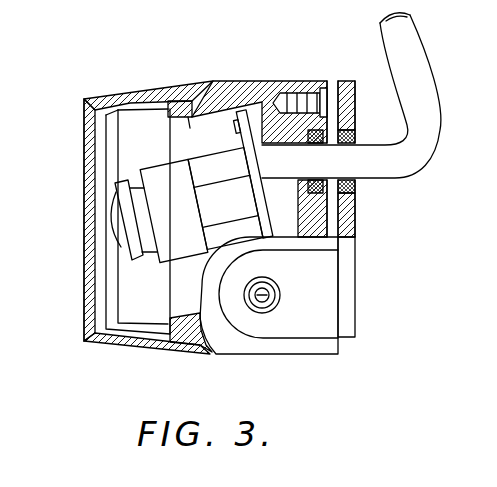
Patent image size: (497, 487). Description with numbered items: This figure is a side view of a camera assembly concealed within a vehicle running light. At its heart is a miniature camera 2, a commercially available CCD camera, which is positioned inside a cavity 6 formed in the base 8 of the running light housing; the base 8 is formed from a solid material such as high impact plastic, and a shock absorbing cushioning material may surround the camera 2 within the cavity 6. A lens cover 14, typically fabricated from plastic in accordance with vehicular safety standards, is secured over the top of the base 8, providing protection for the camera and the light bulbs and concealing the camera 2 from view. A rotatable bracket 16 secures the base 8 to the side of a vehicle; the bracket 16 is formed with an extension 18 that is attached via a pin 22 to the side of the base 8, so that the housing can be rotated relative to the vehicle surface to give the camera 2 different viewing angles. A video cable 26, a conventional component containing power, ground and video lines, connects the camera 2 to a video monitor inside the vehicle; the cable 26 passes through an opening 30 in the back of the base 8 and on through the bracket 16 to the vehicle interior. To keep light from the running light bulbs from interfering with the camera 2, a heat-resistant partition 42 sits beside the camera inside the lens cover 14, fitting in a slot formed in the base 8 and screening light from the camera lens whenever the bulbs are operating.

The camera 2 is at (160, 187).
The cavity 6 is at (175, 103).
The base 8 is at (257, 92).
The lens cover 14 is at (113, 350).
The rotatable bracket 16 is at (347, 307).
The extension 18 is at (328, 313).
The pin 22 is at (268, 297).
The video cable 26 is at (428, 72).
The opening 30 is at (358, 187).
The partition 42 is at (141, 301).